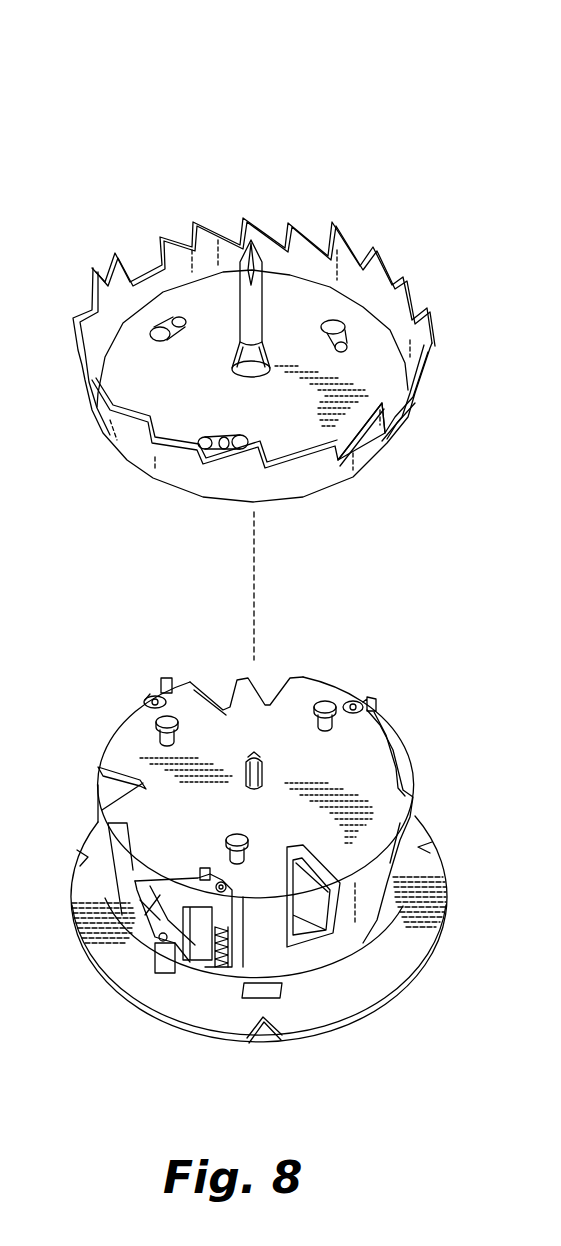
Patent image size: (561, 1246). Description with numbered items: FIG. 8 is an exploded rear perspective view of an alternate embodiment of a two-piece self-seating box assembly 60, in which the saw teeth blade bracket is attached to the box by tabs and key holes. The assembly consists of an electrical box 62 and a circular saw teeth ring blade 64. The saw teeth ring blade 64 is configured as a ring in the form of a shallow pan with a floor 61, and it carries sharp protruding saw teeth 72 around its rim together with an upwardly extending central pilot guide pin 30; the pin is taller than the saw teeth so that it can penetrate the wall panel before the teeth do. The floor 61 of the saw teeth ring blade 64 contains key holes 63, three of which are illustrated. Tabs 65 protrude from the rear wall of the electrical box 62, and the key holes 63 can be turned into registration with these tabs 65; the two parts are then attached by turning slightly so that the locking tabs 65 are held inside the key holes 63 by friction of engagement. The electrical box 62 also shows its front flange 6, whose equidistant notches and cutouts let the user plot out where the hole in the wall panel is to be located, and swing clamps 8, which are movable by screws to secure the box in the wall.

The two-piece self-seating box assembly 60 is at (62, 172).
The floor 61 is at (160, 395).
The electrical box 62 is at (416, 762).
The key holes 63 is at (170, 322).
The saw teeth ring blade 64 is at (432, 303).
The tabs 65 is at (172, 720).
The saw teeth 72 is at (259, 232).
The central pilot guide pin 30 is at (252, 307).
The swing clamps 8 is at (138, 962).
The front flange 6 is at (338, 1000).